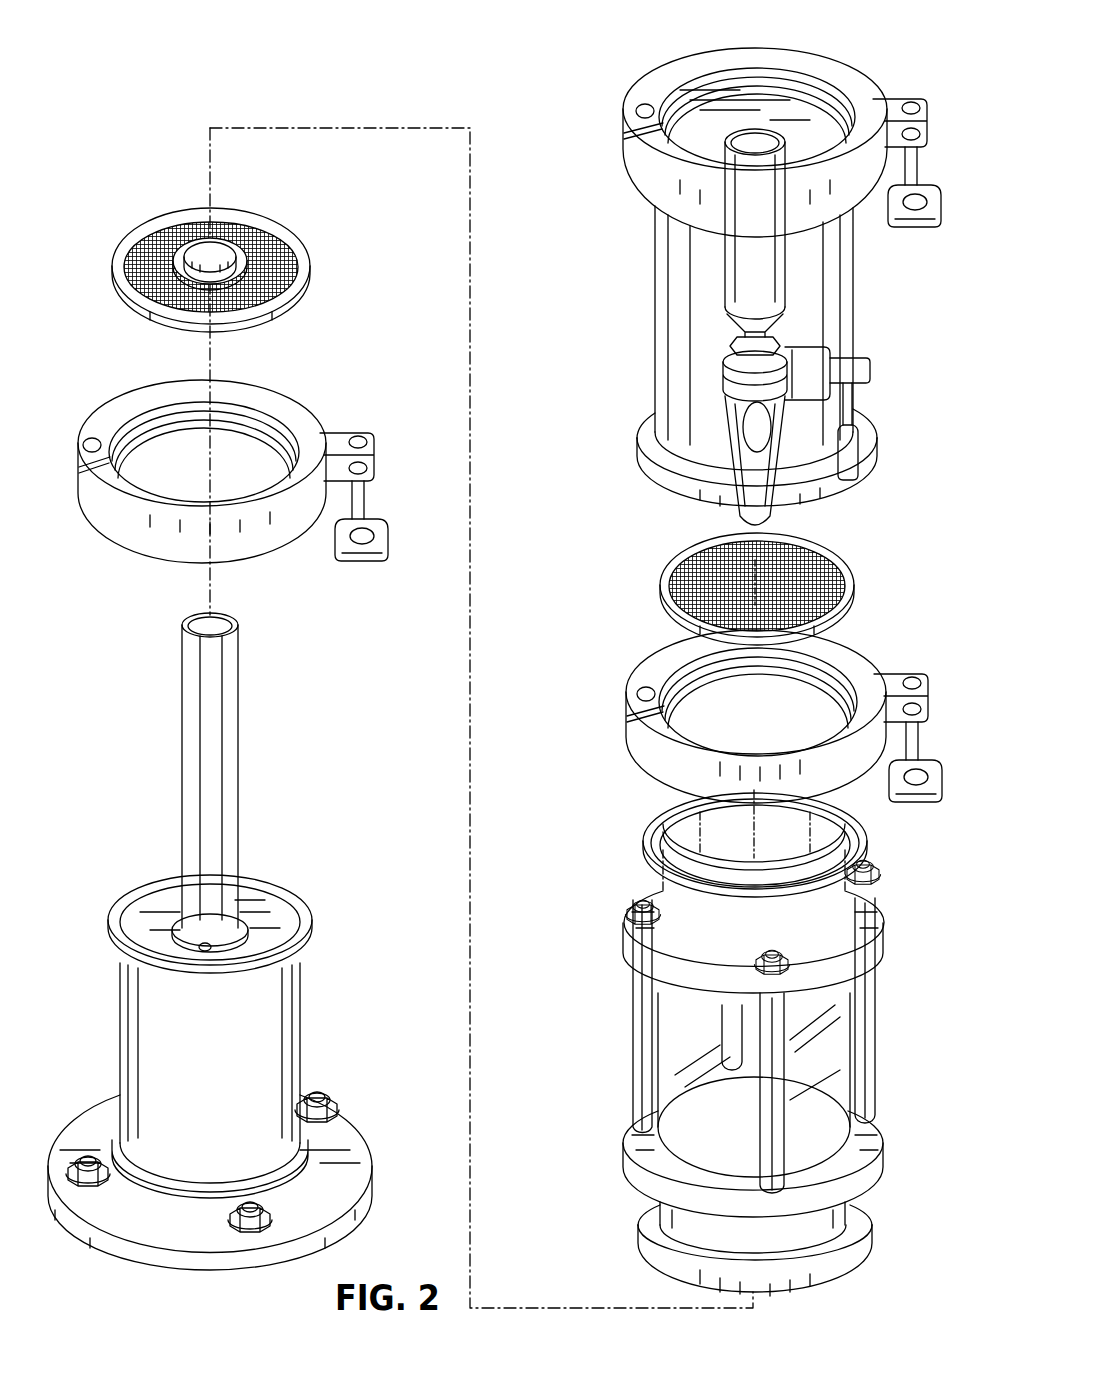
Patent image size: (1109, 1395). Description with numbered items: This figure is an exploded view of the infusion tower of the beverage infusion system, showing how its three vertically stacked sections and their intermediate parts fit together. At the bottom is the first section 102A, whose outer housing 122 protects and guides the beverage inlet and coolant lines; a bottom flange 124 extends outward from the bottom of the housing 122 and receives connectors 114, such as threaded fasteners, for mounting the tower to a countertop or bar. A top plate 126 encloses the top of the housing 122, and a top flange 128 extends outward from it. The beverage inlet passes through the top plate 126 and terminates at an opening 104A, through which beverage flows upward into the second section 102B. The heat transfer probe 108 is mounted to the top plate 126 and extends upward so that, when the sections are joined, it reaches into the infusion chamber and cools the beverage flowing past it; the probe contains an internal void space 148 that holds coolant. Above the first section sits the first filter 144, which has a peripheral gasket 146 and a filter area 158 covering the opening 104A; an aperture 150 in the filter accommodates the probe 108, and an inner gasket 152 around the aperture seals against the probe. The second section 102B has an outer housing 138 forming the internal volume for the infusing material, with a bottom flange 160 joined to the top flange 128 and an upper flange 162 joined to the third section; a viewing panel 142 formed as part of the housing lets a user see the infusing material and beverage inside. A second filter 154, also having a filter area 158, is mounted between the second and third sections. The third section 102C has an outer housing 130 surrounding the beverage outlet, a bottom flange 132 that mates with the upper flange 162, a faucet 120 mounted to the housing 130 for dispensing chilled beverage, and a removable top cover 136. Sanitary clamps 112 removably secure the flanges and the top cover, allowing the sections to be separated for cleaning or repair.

The first section 102A is at (455, 1075).
The second section 102B is at (747, 1041).
The third section 102C is at (752, 289).
The opening 104A is at (200, 950).
The heat transfer probe 108 is at (232, 718).
The sanitary clamp 112 is at (150, 535).
The connector 114 is at (88, 1186).
The faucet 120 is at (740, 515).
The outer housing 122 is at (285, 1072).
The bottom flange 124 is at (348, 1178).
The top plate 126 is at (262, 905).
The top flange 128 is at (122, 912).
The outer housing 130 is at (845, 300).
The bottom flange 132 is at (805, 478).
The top cover 136 is at (702, 92).
The outer housing 138 is at (672, 1030).
The viewing panel 142 is at (768, 1114).
The first filter 144 is at (192, 254).
The peripheral gasket 146 is at (130, 307).
The internal void space 148 is at (258, 245).
The aperture 150 is at (185, 258).
The inner gasket 152 is at (255, 262).
The second filter 154 is at (774, 589).
The filter area 158 is at (695, 587).
The bottom flange 160 is at (660, 1265).
The upper flange 162 is at (660, 815).